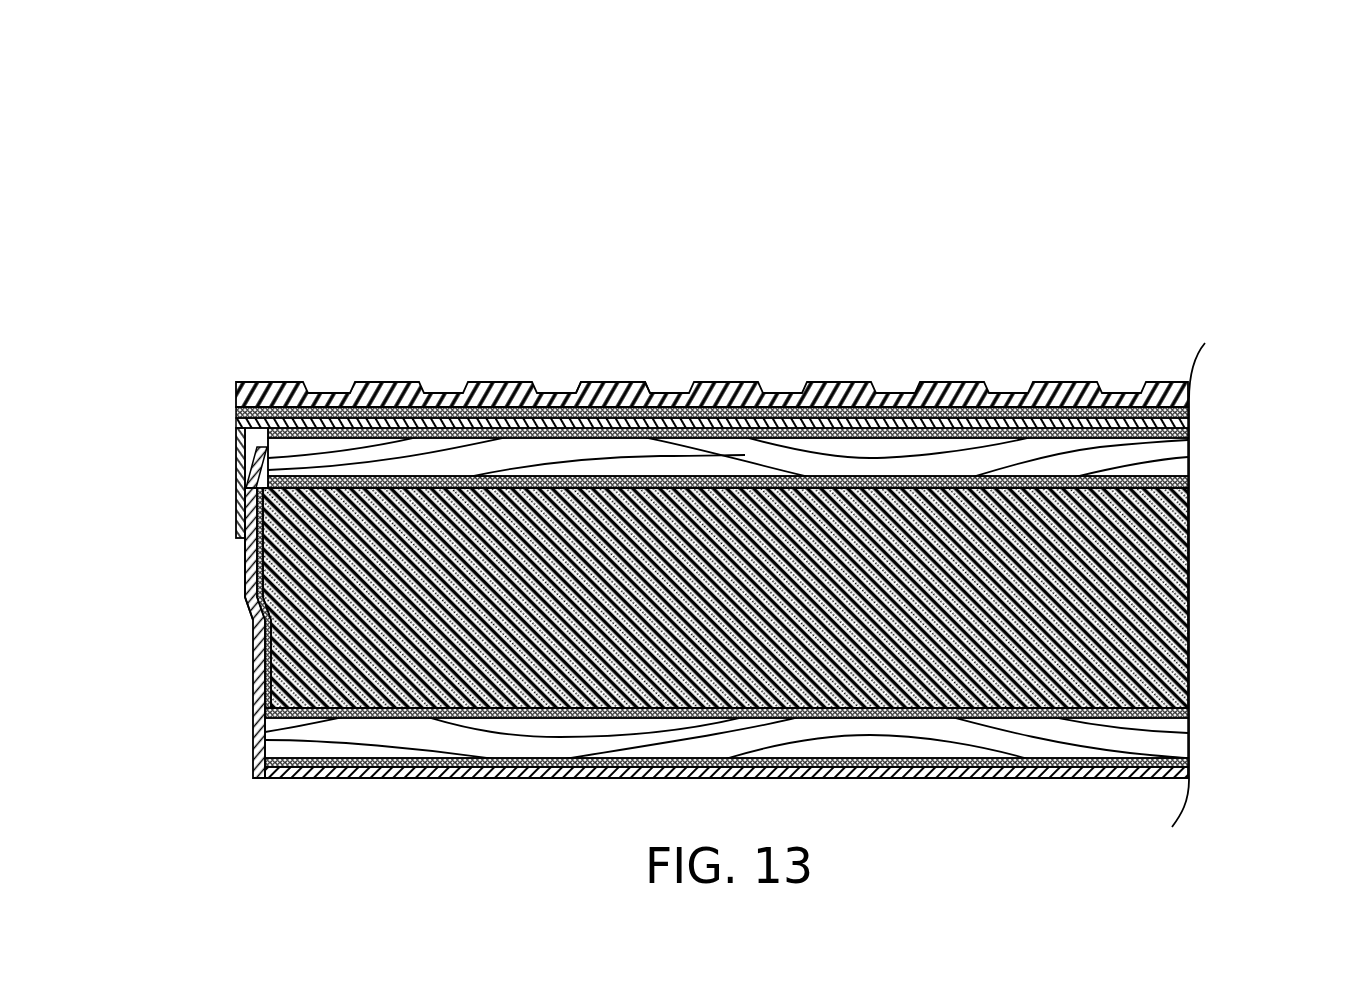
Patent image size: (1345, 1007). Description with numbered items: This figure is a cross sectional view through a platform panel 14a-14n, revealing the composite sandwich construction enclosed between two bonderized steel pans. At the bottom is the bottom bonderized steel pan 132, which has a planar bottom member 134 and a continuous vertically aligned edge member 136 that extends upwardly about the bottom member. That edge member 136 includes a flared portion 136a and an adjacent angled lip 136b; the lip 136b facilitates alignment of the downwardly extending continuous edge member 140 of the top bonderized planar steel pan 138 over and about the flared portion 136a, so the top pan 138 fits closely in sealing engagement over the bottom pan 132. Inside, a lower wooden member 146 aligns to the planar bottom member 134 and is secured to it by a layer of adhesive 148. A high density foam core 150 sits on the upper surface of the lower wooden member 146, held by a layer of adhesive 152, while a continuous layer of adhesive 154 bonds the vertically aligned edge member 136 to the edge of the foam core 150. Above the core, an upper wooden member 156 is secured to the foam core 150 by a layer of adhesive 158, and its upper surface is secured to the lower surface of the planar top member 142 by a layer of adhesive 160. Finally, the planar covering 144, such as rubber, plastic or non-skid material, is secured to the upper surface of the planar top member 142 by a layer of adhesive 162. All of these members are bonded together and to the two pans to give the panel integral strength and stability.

The platform panel 14a-14n is at (456, 172).
The bottom bonderized steel pan 132 is at (1190, 770).
The planar bottom member 134 is at (1070, 777).
The continuous vertically aligned edge member 136 is at (258, 667).
The flared portion 136a is at (247, 570).
The angled lip 136b is at (257, 452).
The top bonderized planar steel pan 138 is at (1192, 420).
The continuous vertically aligned edge member 140 is at (237, 477).
The planar top member 142 is at (907, 405).
The planar covering 144 is at (618, 393).
The lower wooden member 146 is at (278, 730).
The layer of adhesive 148 is at (1190, 757).
The high density foam core 150 is at (1190, 608).
The layer of adhesive 152 is at (1190, 708).
The continuous layer of adhesive 154 is at (268, 647).
The upper wooden member 156 is at (1170, 462).
The layer of adhesive 158 is at (1192, 483).
The layer of adhesive 160 is at (1192, 432).
The layer of adhesive 162 is at (1192, 410).